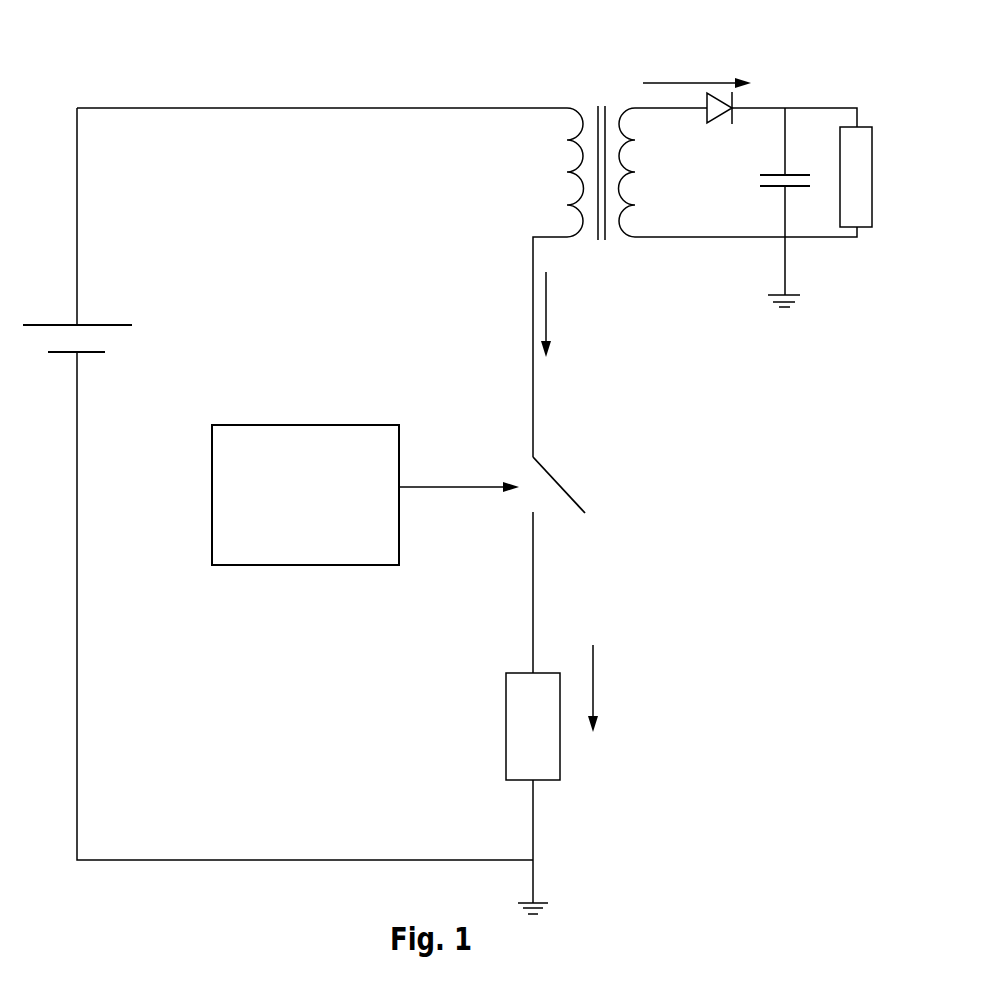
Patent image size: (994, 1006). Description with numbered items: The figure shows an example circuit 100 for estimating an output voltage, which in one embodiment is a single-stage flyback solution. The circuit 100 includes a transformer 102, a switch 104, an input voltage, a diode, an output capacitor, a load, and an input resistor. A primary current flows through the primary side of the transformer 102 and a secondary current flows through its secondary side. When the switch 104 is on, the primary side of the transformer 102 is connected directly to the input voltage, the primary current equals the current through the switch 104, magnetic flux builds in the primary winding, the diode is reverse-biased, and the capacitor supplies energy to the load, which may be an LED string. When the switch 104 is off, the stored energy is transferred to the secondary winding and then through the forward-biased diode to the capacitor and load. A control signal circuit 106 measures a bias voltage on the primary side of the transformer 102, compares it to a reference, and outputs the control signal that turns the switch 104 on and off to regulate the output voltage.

The circuit 100 is at (150, 42).
The transformer 102 is at (615, 281).
The switch 104 is at (572, 499).
The control signal circuit 106 is at (306, 425).